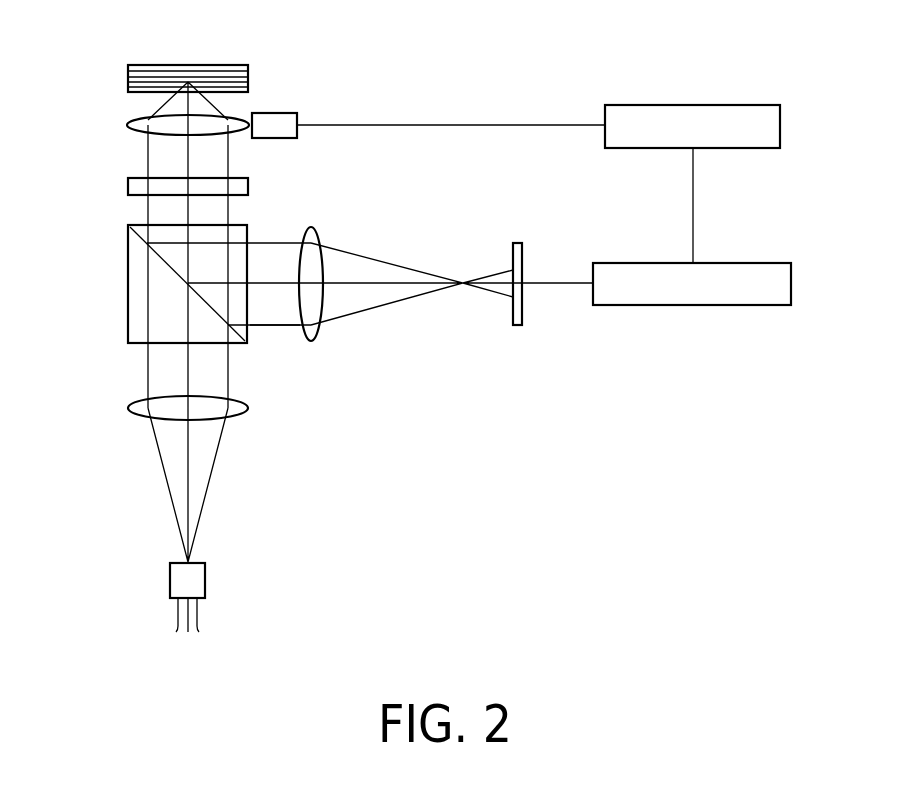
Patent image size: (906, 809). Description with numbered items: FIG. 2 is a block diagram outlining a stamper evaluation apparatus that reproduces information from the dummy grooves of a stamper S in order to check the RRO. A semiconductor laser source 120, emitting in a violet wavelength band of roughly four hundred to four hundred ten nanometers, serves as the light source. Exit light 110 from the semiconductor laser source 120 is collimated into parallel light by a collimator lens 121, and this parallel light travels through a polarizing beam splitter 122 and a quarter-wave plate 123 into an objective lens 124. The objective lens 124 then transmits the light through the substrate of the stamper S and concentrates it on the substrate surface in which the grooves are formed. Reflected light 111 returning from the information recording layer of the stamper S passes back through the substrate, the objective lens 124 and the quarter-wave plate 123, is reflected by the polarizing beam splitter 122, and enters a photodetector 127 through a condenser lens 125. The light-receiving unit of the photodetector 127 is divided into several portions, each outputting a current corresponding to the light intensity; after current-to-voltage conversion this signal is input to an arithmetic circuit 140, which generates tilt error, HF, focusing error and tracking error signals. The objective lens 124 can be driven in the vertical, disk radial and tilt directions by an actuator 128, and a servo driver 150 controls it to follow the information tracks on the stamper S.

The stamper S is at (213, 65).
The exit light 110 is at (166, 497).
The reflected light 111 is at (278, 328).
The semiconductor laser source 120 is at (170, 583).
The collimator lens 121 is at (128, 408).
The polarizing beam splitter 122 is at (128, 283).
The λ/4 plate 123 is at (127, 187).
The objective lens 124 is at (127, 126).
The condenser lens 125 is at (310, 226).
The photodetector 127 is at (518, 243).
The actuator 128 is at (281, 112).
The arithmetic circuit 140 is at (793, 284).
The servo driver 150 is at (782, 127).